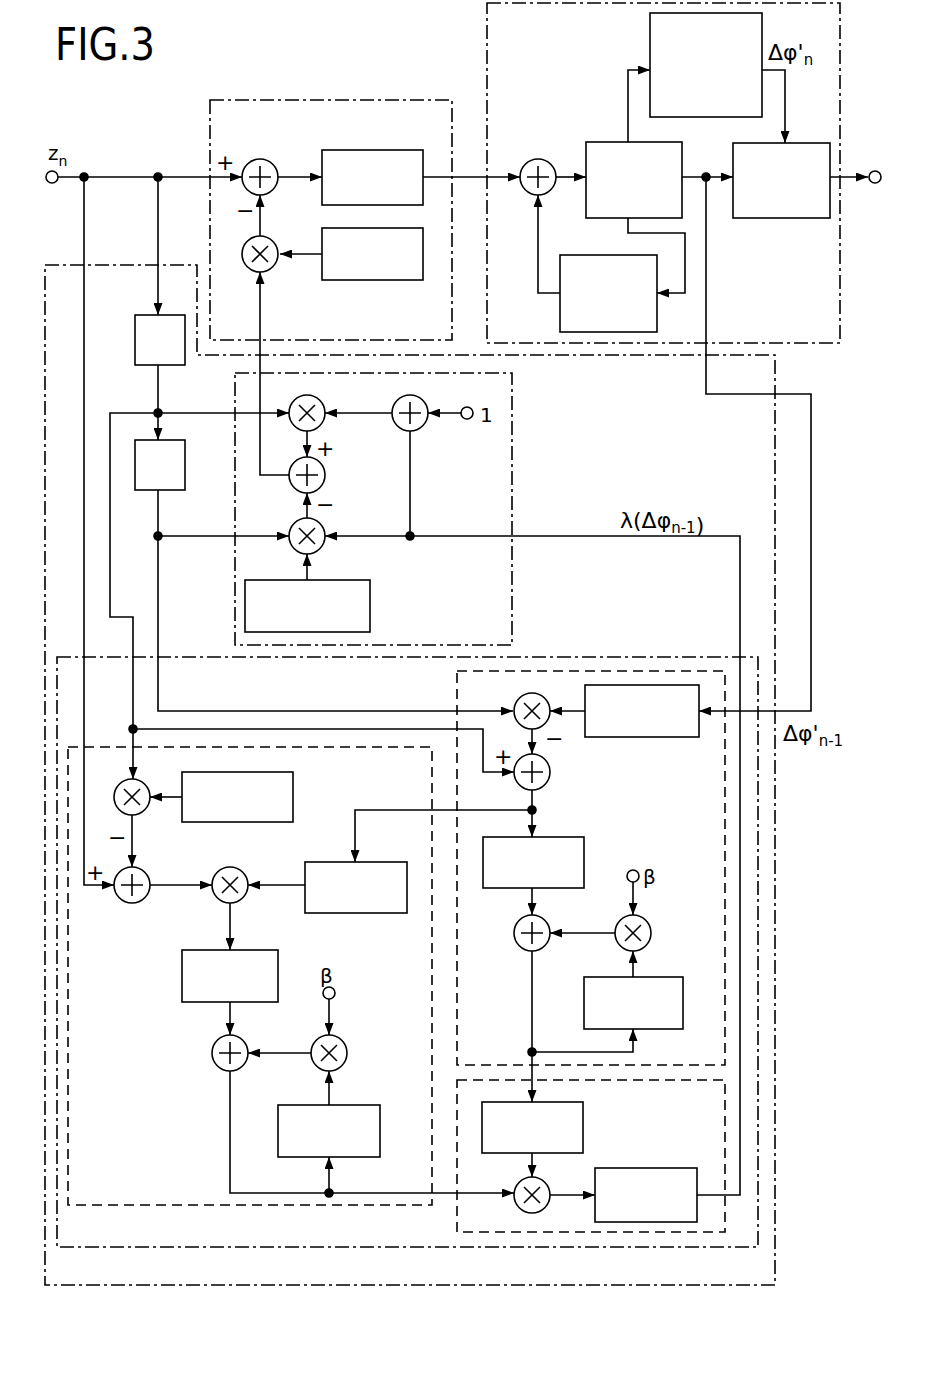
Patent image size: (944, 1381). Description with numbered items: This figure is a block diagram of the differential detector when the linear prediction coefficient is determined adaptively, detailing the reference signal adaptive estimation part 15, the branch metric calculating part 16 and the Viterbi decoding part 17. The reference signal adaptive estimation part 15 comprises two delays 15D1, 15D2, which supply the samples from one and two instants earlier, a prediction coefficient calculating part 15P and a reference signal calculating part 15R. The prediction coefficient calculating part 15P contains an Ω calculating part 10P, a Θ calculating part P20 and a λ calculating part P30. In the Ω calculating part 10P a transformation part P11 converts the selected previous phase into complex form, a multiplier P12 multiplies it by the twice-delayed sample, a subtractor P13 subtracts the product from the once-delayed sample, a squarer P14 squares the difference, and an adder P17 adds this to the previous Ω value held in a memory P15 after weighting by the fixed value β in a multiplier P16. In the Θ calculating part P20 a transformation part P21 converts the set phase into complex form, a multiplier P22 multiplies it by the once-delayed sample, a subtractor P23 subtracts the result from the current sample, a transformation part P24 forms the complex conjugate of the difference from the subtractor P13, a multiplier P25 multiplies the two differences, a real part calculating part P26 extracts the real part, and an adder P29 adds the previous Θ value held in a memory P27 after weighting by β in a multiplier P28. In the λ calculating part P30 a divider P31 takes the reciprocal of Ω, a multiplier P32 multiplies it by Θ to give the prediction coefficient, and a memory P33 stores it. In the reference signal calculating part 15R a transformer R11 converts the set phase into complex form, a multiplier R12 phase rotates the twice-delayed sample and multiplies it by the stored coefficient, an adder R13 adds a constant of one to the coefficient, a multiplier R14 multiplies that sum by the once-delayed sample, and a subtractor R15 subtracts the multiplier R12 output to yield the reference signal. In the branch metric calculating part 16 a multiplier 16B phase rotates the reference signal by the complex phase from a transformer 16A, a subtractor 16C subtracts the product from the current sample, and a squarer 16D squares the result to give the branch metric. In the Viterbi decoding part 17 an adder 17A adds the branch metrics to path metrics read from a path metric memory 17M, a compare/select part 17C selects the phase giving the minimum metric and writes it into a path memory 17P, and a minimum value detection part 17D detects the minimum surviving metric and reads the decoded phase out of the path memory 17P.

The reference signal adaptive estimation part 15 is at (235, 1285).
The prediction coefficient calculating part 15P is at (298, 1247).
The reference signal calculating part 15R is at (512, 463).
The delay 15D1 is at (135, 320).
The delay 15D2 is at (185, 478).
The branch metric calculating part 16 is at (290, 100).
The transformer 16A is at (366, 280).
The multiplier 16B is at (272, 270).
The subtractor 16C is at (262, 159).
The squarer 16D is at (380, 143).
The Viterbi decoding part 17 is at (487, 50).
The adder 17A is at (527, 160).
The compare/select part 17C is at (604, 142).
The minimum value detection part 17D is at (650, 44).
The path metric memory 17M is at (560, 305).
The path memory 17P is at (780, 218).
The Ω calculating part 10P is at (457, 680).
The transformer R11 is at (370, 610).
The multiplier R12 is at (322, 548).
The adder R13 is at (422, 428).
The multiplier R14 is at (320, 401).
The subtractor R15 is at (325, 480).
The transformation part P11 is at (658, 738).
The multiplier P12 is at (548, 725).
The subtractor P13 is at (550, 778).
The squarer P14 is at (584, 851).
The memory P15 is at (606, 977).
The multiplier P16 is at (651, 931).
The adder P17 is at (522, 948).
The Θ calculating part P20 is at (165, 1205).
The transformation part P21 is at (293, 785).
The multiplier P22 is at (143, 812).
The subtractor P23 is at (130, 903).
The transformation part P24 is at (360, 913).
The multiplier P25 is at (242, 870).
The real part calculating part P26 is at (182, 998).
The memory P27 is at (368, 1105).
The multiplier P28 is at (345, 1045).
The adder P29 is at (215, 1068).
The λ calculating part P30 is at (457, 1240).
The divider P31 is at (583, 1127).
The multiplier P32 is at (516, 1186).
The memory P33 is at (636, 1168).